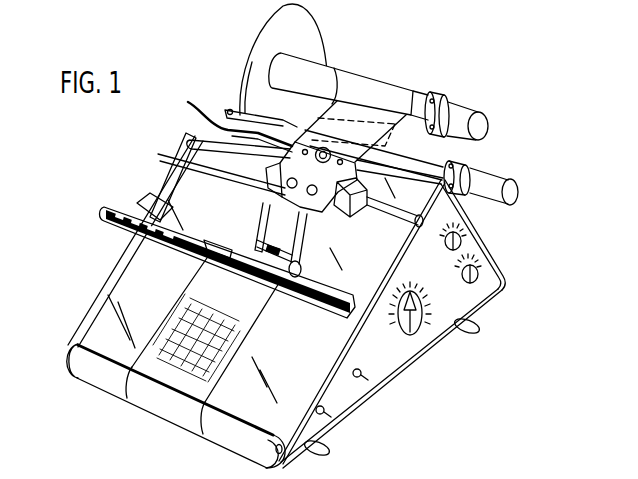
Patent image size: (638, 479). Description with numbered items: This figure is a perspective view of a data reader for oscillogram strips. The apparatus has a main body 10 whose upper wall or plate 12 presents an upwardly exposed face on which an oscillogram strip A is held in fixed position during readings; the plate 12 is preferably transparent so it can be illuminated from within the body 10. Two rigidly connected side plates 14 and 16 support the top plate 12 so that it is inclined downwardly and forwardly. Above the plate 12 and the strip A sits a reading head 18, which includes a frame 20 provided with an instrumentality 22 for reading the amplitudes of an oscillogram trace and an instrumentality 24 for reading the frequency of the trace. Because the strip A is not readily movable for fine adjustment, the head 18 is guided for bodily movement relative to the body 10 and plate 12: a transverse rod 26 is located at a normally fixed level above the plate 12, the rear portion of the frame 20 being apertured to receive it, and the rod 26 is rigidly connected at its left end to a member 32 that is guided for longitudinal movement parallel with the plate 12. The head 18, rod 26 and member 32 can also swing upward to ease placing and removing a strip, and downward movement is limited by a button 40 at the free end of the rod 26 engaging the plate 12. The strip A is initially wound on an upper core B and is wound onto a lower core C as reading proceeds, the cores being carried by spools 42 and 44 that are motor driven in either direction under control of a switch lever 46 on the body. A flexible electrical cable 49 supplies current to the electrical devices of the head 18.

The main body 10 is at (504, 264).
The upper wall or plate 12 is at (95, 326).
The side plate 14 is at (405, 356).
The side plate 16 is at (110, 281).
The reading head 18 is at (338, 213).
The frame 20 is at (274, 215).
The instrumentality for reading amplitudes 22 is at (204, 263).
The instrumentality for reading frequency 24 is at (258, 240).
The transverse rod 26 is at (404, 214).
The member 32 is at (160, 176).
The button 40 is at (418, 228).
The spool 42 is at (488, 124).
The spool 44 is at (522, 191).
The switch lever 46 is at (337, 414).
The flexible electrical cable 49 is at (193, 102).
The oscillogram strip A is at (170, 407).
The core B is at (320, 74).
The core C is at (440, 160).